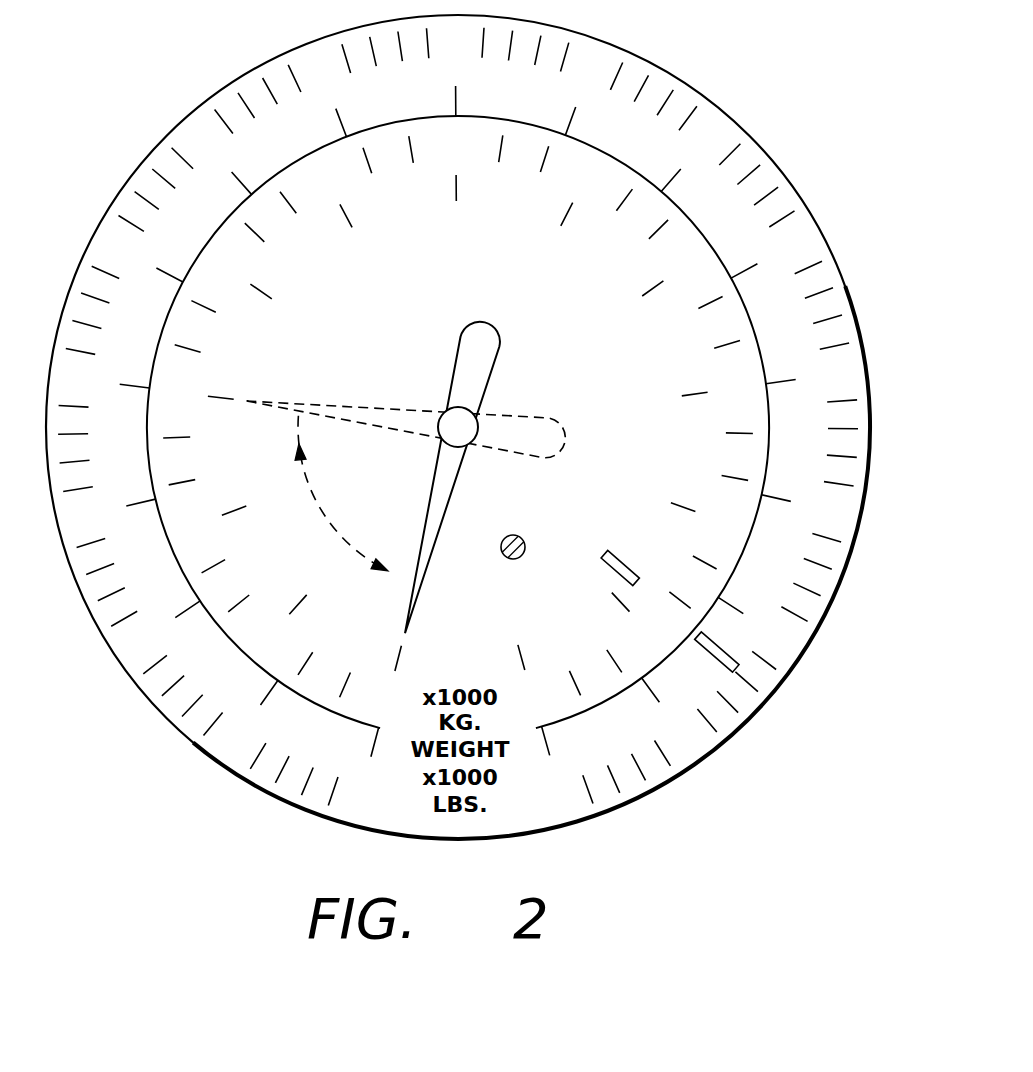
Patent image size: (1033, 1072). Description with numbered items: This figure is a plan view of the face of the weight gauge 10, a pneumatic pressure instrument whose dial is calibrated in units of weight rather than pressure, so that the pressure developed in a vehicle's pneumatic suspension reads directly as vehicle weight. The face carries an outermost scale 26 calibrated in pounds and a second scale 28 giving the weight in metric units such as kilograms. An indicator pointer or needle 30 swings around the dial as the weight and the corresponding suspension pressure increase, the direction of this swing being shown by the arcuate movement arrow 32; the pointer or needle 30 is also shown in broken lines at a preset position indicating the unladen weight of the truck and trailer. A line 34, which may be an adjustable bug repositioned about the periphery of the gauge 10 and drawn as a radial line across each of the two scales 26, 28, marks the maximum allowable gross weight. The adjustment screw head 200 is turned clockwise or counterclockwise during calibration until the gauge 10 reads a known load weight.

The weight gauge 10 is at (716, 846).
The outermost scale 26 is at (241, 766).
The second scale 28 is at (227, 630).
The indicator pointer or needle 30 is at (432, 492).
The arcuate movement arrow 32 is at (323, 527).
The maximum gross weight indicator line 34 is at (705, 657).
The adjustment screw head 200 is at (526, 546).